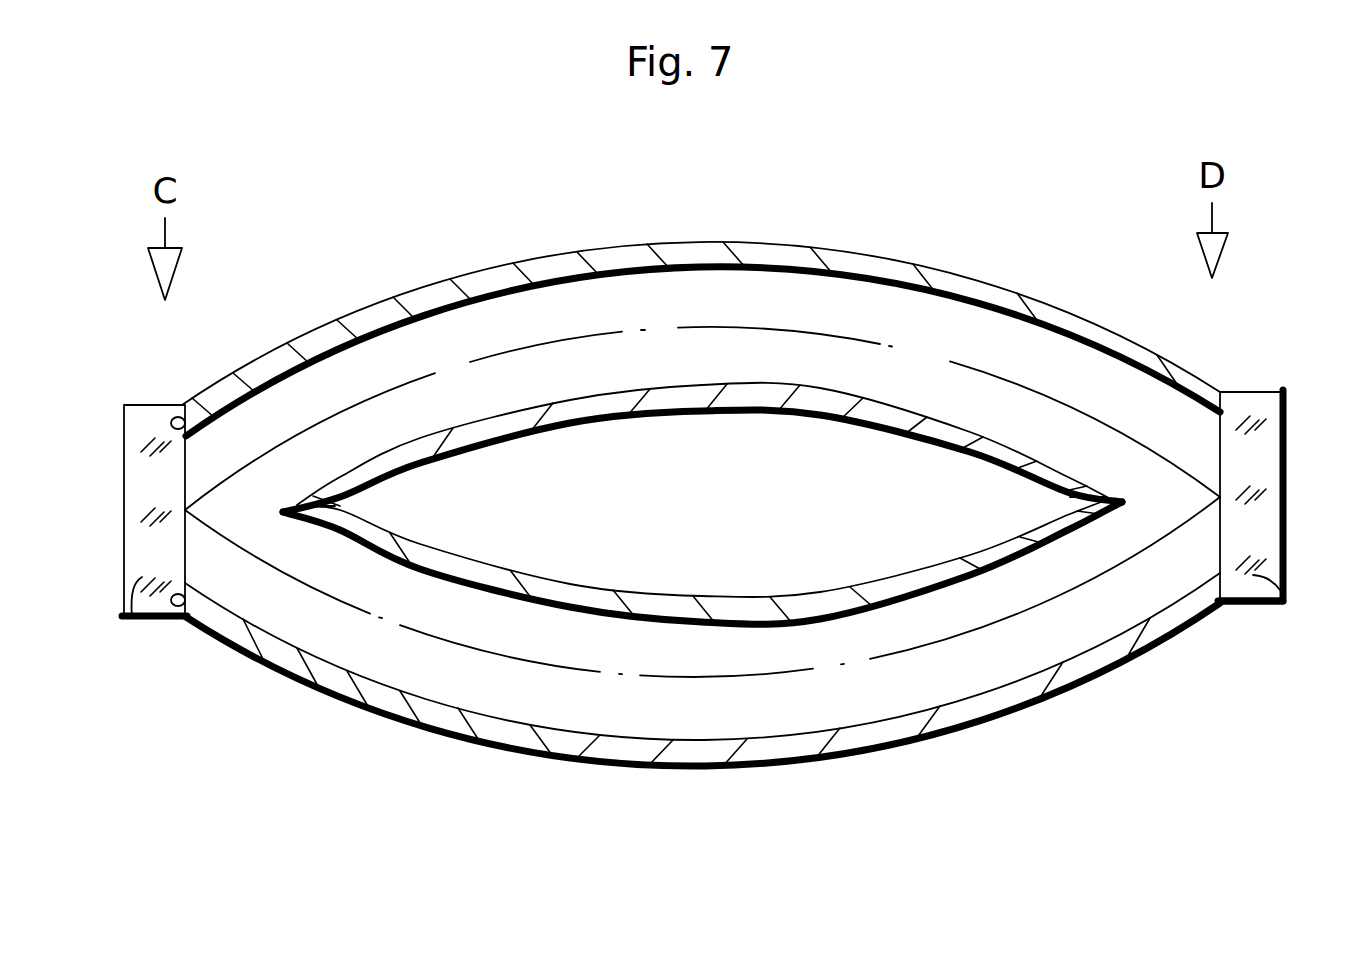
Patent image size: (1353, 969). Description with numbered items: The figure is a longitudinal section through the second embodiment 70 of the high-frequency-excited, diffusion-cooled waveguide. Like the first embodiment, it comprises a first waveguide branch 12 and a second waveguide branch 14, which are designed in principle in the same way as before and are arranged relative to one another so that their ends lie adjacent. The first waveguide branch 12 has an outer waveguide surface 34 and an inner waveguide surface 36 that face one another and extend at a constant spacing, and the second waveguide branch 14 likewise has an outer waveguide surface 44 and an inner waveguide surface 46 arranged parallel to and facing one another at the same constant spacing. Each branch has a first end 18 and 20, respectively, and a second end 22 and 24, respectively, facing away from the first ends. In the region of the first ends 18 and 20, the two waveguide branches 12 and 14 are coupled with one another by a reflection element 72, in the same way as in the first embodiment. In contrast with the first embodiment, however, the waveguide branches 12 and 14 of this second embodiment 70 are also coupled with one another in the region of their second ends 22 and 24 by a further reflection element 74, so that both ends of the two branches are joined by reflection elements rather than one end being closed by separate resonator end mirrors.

The first waveguide branch 12 is at (425, 276).
The second waveguide branch 14 is at (950, 710).
The first end 18 is at (1220, 392).
The first end 20 is at (1225, 607).
The second end 22 is at (183, 403).
The second end 24 is at (178, 620).
The outer waveguide surface 34 is at (313, 345).
The inner waveguide surface 36 is at (695, 385).
The outer waveguide surface 44 is at (780, 735).
The inner waveguide surface 46 is at (497, 613).
The second embodiment 70 is at (952, 263).
The reflection element 72 is at (1285, 610).
The reflection element 74 is at (132, 618).